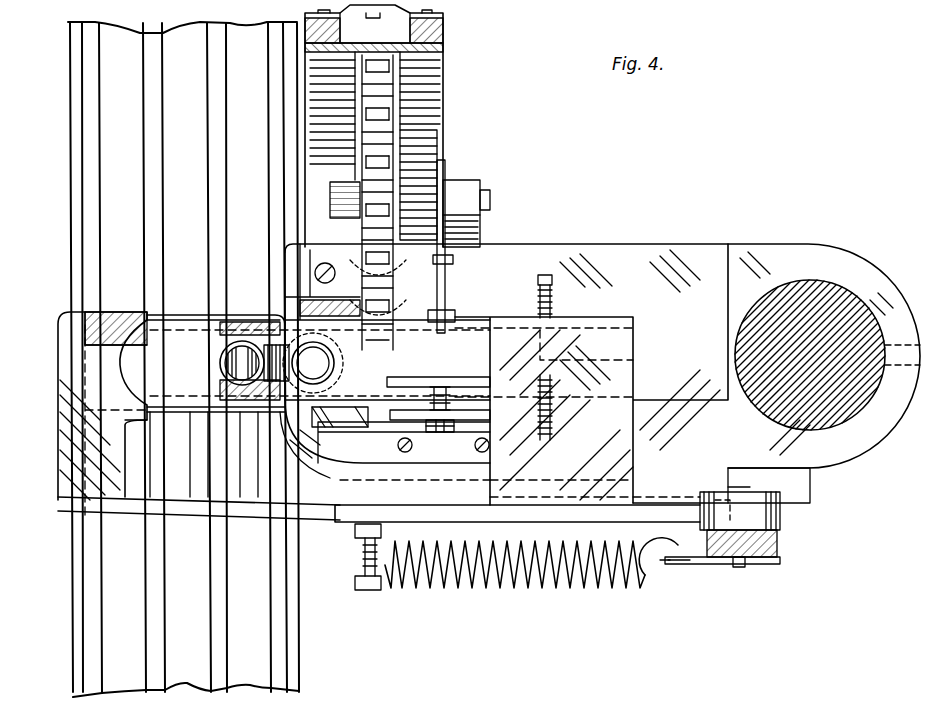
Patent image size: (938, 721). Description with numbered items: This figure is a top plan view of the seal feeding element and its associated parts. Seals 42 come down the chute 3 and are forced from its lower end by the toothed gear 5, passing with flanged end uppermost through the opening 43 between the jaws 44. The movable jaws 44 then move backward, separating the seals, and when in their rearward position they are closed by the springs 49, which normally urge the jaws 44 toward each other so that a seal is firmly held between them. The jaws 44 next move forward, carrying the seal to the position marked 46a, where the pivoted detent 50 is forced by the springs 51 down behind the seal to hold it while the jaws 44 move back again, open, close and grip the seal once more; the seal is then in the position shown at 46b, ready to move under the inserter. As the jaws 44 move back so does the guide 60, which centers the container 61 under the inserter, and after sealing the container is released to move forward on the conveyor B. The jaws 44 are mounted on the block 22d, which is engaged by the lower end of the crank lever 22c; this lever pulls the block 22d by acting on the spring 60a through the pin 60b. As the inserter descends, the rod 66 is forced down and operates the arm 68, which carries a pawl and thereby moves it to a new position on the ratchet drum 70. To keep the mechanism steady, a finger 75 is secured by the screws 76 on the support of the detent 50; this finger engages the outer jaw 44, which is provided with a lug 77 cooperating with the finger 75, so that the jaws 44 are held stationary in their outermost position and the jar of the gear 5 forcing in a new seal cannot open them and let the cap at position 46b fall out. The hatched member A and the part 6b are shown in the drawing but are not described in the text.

The conveyor B is at (108, 268).
The spindle / shaft A is at (832, 292).
The chute 3 is at (430, 73).
The toothed gear 5 is at (365, 115).
The ratchet drum 70 is at (430, 150).
The bearing bracket 6b is at (478, 229).
The opening 43 is at (448, 301).
The arm 68 is at (452, 282).
The rod 66 is at (455, 317).
The springs 49 is at (555, 300).
The guide 60 is at (70, 357).
The container 61 is at (178, 322).
The seal position 46b is at (242, 363).
The seal position 46a is at (313, 363).
The jaws 44 is at (222, 334).
The seals 42 is at (222, 362).
The springs 51 is at (400, 380).
The pivoted detent 50 is at (330, 432).
The finger 75 is at (280, 436).
The lug 77 is at (330, 478).
The screws 76 is at (440, 478).
The block 22d is at (575, 510).
The crank lever 22c is at (781, 548).
The pin 60b is at (362, 556).
The spring 60a is at (497, 582).